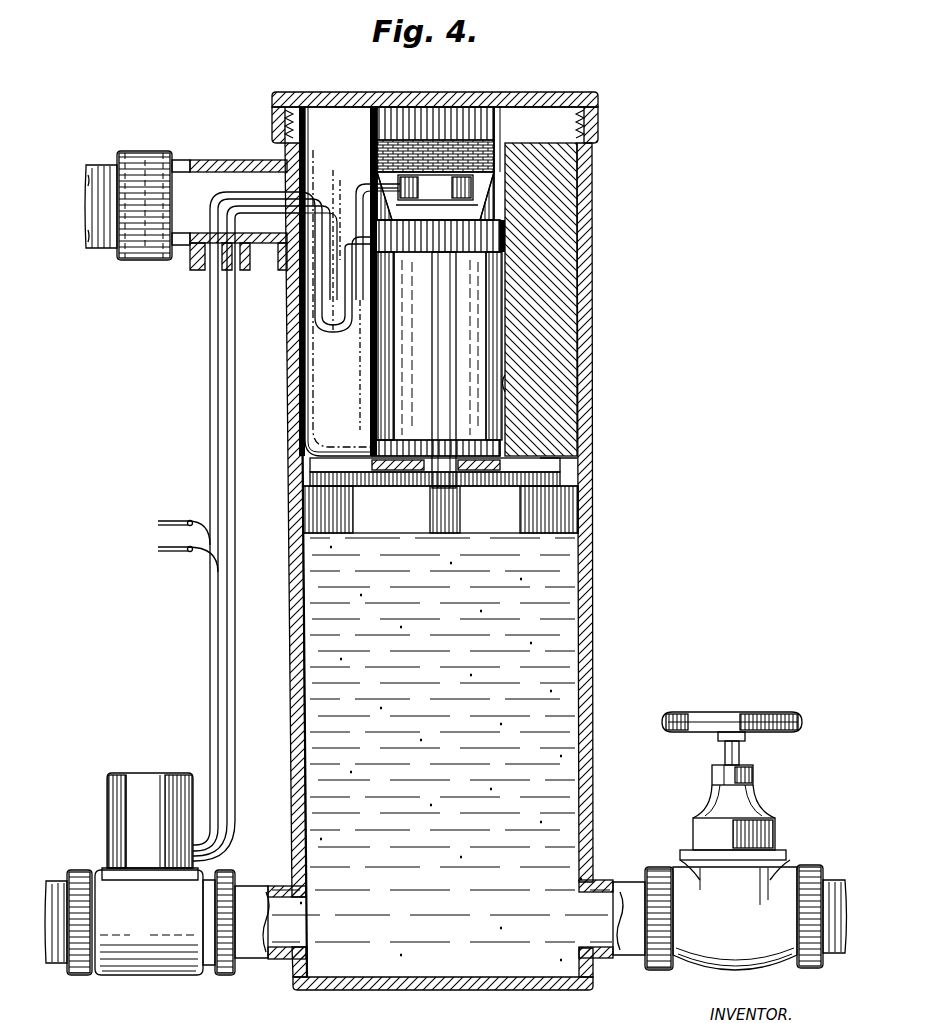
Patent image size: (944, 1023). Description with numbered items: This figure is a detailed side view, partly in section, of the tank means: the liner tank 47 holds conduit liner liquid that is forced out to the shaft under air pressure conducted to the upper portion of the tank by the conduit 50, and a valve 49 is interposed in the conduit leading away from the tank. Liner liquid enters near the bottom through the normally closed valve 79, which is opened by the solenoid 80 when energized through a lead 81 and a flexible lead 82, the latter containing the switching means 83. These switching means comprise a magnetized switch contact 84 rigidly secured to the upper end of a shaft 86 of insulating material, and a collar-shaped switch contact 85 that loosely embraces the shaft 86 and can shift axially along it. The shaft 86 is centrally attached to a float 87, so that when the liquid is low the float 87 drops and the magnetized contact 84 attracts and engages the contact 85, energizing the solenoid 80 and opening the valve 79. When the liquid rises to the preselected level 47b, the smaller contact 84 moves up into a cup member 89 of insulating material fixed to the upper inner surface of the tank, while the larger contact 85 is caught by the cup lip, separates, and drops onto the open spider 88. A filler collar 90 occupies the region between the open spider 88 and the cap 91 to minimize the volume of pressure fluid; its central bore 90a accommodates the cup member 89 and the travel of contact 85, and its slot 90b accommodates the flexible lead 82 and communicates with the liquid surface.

The liner tank 47 is at (596, 642).
The preselected high liquid level 47b is at (290, 522).
The valve 49 is at (691, 829).
The conduit 50 is at (214, 160).
The normally closed valve 79 is at (150, 975).
The solenoid 80 is at (122, 796).
The lead 81 is at (210, 606).
The flexible lead 82 is at (237, 614).
The switching means 83 is at (503, 170).
The switch contact 84 is at (498, 202).
The switch contact 85 is at (503, 236).
The shaft 86 is at (452, 340).
The float 87 is at (560, 520).
The open spider 88 is at (548, 466).
The cup member 89 is at (452, 196).
The filler collar 90 is at (575, 322).
The central bore 90a is at (508, 388).
The slot 90b is at (345, 376).
The cap 91 is at (540, 93).